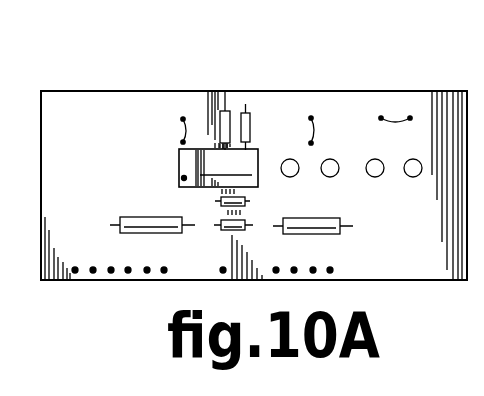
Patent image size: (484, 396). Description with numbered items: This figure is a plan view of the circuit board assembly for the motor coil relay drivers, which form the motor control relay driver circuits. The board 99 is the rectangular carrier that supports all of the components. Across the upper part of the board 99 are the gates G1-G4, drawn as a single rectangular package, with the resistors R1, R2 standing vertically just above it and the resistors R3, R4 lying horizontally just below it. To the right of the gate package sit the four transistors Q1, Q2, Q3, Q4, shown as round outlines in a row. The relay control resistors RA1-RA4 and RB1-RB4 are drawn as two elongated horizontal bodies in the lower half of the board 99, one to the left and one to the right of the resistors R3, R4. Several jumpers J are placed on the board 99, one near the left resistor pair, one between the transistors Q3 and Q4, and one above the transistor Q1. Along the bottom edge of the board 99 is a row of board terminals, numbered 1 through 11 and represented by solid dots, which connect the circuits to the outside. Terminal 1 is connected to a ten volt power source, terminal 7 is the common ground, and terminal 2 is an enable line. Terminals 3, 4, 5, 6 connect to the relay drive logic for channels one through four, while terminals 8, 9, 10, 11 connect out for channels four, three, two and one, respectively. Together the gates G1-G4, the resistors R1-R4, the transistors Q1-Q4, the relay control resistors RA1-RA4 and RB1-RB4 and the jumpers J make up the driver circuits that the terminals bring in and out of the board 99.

The board 99 is at (110, 104).
The jumpers J is at (180, 133).
The resistor R1 is at (226, 122).
The resistor R2 is at (246, 126).
The resistor R3 is at (244, 200).
The resistor R4 is at (236, 228).
The gates G1-G4 is at (218, 168).
The transistor Q1 is at (414, 167).
The transistor Q2 is at (376, 167).
The transistor Q3 is at (329, 167).
The transistor Q4 is at (292, 167).
The relay control resistors RA1-RA4 is at (154, 221).
The relay control resistors RB1-RB4 is at (318, 222).
The board terminal T1 1 is at (77, 261).
The board terminal T2 2 is at (93, 261).
The board terminal T3 3 is at (111, 261).
The board terminal T4 4 is at (128, 261).
The board terminal T5 5 is at (147, 261).
The board terminal T6 6 is at (164, 261).
The board terminal T7 7 is at (224, 261).
The board terminal T8 8 is at (276, 261).
The board terminal T9 9 is at (294, 261).
The board terminal T10 10 is at (314, 261).
The board terminal T11 11 is at (334, 261).